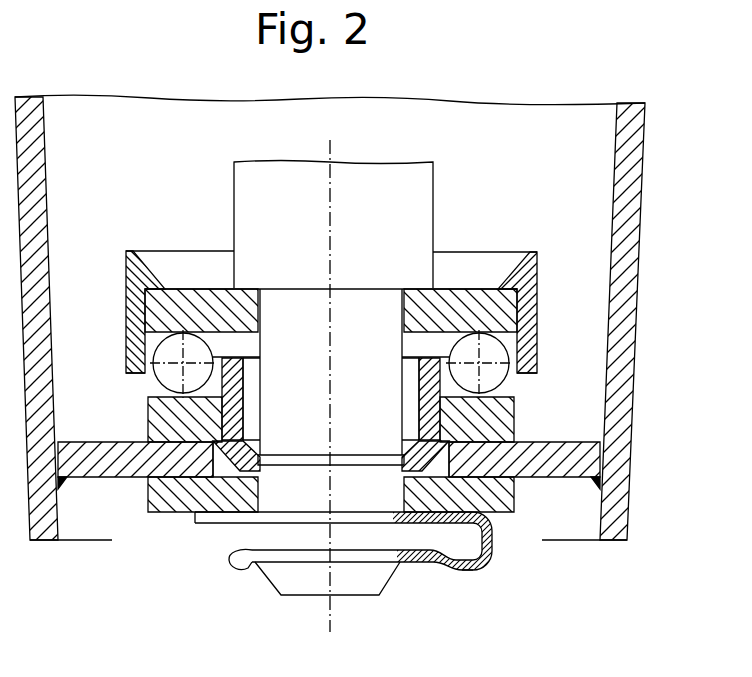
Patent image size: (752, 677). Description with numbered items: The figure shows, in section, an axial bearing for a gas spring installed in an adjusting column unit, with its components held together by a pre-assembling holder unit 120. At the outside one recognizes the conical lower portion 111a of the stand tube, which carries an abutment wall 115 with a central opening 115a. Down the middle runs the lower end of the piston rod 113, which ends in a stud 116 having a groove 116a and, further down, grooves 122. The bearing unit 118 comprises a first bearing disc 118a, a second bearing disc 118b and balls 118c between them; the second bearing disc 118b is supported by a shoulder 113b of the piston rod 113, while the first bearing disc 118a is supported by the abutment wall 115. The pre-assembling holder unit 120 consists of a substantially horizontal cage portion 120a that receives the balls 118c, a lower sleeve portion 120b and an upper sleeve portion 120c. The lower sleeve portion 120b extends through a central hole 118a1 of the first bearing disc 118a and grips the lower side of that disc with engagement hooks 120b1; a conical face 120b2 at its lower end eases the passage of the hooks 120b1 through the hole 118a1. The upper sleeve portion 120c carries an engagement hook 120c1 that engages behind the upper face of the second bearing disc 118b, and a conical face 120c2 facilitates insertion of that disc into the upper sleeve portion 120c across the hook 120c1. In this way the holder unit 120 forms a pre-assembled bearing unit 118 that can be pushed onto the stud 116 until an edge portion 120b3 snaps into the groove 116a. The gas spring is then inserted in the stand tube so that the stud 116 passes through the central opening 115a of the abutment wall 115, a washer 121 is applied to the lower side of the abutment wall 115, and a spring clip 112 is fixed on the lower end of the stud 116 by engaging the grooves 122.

The conical lower portion 111a is at (630, 250).
The spring clip 112 is at (481, 570).
The piston rod 113 is at (418, 210).
The shoulder 113b is at (392, 288).
The abutment wall 115 is at (563, 462).
The central opening 115a is at (433, 545).
The stud 116 is at (268, 310).
The groove 116a is at (306, 456).
The bearing unit 118 is at (567, 385).
The first bearing disc 118a is at (500, 427).
The central hole 118a1 is at (205, 432).
The second bearing disc 118b is at (497, 317).
The balls 118c is at (165, 357).
The pre-assembling holder unit 120 is at (537, 358).
The cage portion 120a is at (222, 400).
The lower sleeve portion 120b is at (220, 410).
The engagement hooks 120b1 is at (207, 452).
The conical face 120b2 is at (224, 480).
The edge portion 120b3 is at (330, 438).
The upper sleeve portion 120c is at (522, 332).
The engagement hook 120c1 is at (135, 272).
The conical face 120c2 is at (159, 281).
The washer 121 is at (492, 545).
The grooves 122 is at (306, 553).